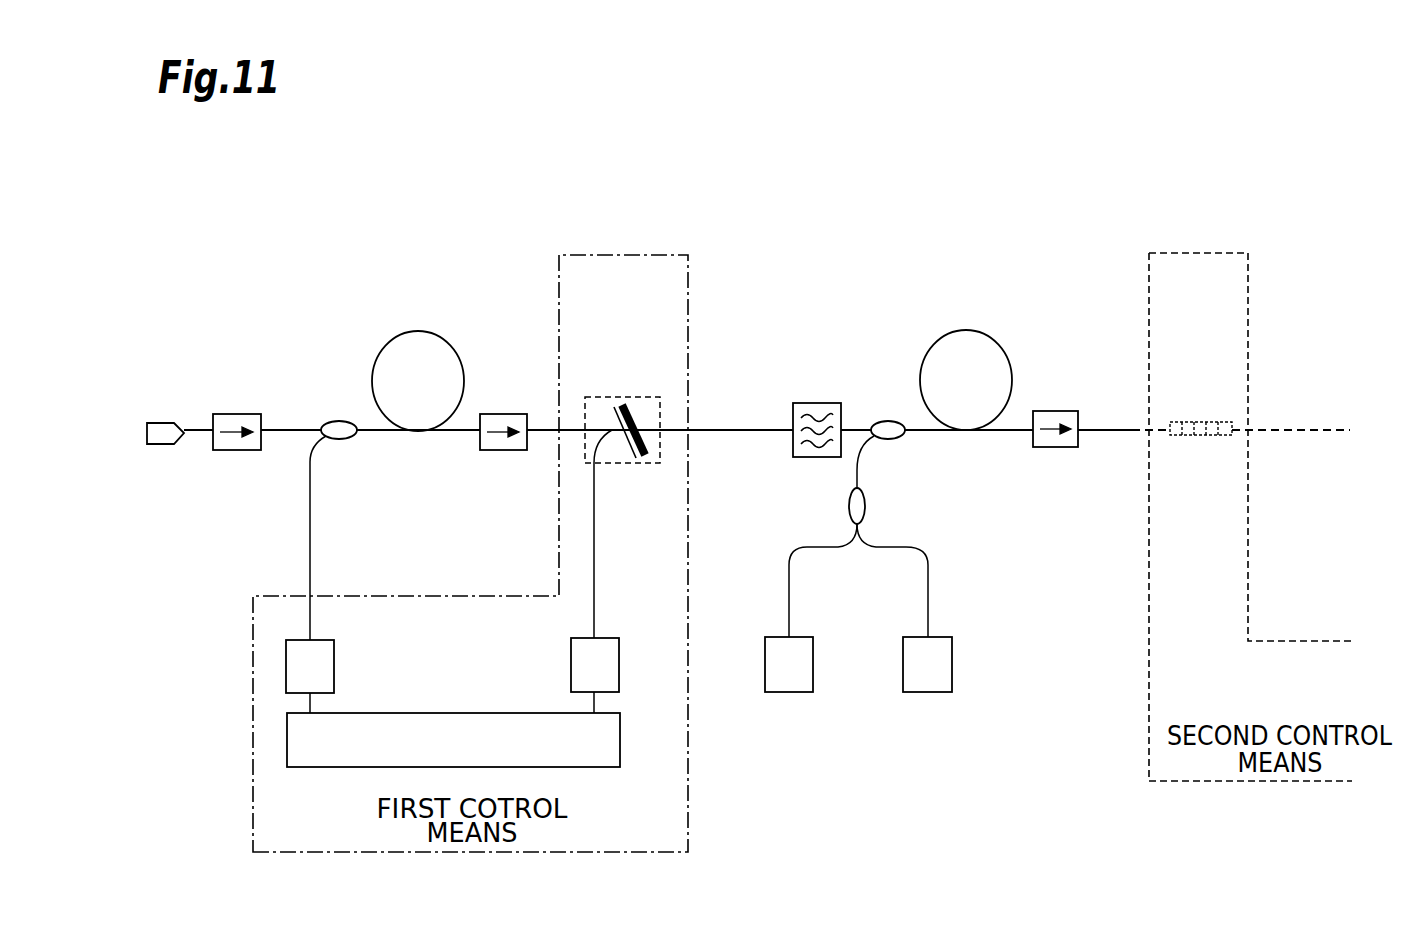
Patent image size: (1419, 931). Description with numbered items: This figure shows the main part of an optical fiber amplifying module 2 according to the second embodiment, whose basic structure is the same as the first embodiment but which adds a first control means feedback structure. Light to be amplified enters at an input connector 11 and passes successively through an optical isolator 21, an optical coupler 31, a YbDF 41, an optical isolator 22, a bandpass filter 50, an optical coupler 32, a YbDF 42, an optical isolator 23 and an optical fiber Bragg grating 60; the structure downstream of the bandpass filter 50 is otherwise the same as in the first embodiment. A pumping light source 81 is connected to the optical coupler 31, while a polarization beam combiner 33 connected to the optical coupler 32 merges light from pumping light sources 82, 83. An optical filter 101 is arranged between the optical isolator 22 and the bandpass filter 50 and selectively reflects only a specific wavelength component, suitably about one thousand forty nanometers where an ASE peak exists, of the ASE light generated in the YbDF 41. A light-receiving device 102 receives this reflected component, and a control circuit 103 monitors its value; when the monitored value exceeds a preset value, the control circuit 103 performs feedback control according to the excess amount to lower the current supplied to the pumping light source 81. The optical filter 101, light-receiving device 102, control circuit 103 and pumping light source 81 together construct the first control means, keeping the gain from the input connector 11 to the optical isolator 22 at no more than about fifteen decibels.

The optical fiber amplifying module 2 is at (1247, 160).
The input connector 11 is at (165, 420).
The optical isolator 21 is at (236, 414).
The optical isolator 22 is at (503, 414).
The optical isolator 23 is at (1056, 411).
The optical coupler 31 is at (340, 422).
The optical coupler 32 is at (889, 421).
The polarization beam combiner 33 is at (866, 505).
The YbDF 41 is at (419, 331).
The YbDF 42 is at (966, 330).
The bandpass filter 50 is at (818, 403).
The optical fiber Bragg grating 60 is at (1200, 421).
The pumping light source 81 is at (335, 665).
The pumping light source 82 is at (765, 661).
The pumping light source 83 is at (953, 661).
The optical filter 101 is at (620, 397).
The light-receiving device 102 is at (571, 664).
The control circuit 103 is at (580, 768).